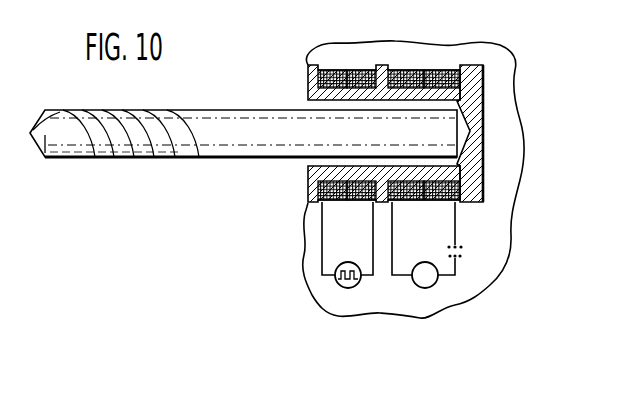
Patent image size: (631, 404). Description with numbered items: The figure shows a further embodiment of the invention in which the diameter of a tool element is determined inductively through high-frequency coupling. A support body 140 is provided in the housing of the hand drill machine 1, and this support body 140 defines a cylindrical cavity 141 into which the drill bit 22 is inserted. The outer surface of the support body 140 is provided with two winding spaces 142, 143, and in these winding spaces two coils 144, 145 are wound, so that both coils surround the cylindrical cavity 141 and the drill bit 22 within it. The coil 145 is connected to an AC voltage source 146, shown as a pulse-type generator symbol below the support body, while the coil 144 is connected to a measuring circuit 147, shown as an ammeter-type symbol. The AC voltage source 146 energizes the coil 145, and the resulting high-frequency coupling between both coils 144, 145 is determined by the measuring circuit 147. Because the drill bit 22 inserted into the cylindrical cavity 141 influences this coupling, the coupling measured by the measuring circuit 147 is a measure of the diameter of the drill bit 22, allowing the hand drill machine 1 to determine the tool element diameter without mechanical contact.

The hand drill machine 1 is at (498, 225).
The drill bit 22 is at (258, 132).
The support body 140 is at (466, 89).
The cylindrical cavity 141 is at (310, 106).
The winding space 142 is at (399, 78).
The winding space 143 is at (333, 78).
The coil 144 is at (438, 77).
The coil 145 is at (351, 77).
The AC voltage source 146 is at (338, 283).
The measuring circuit 147 is at (445, 283).